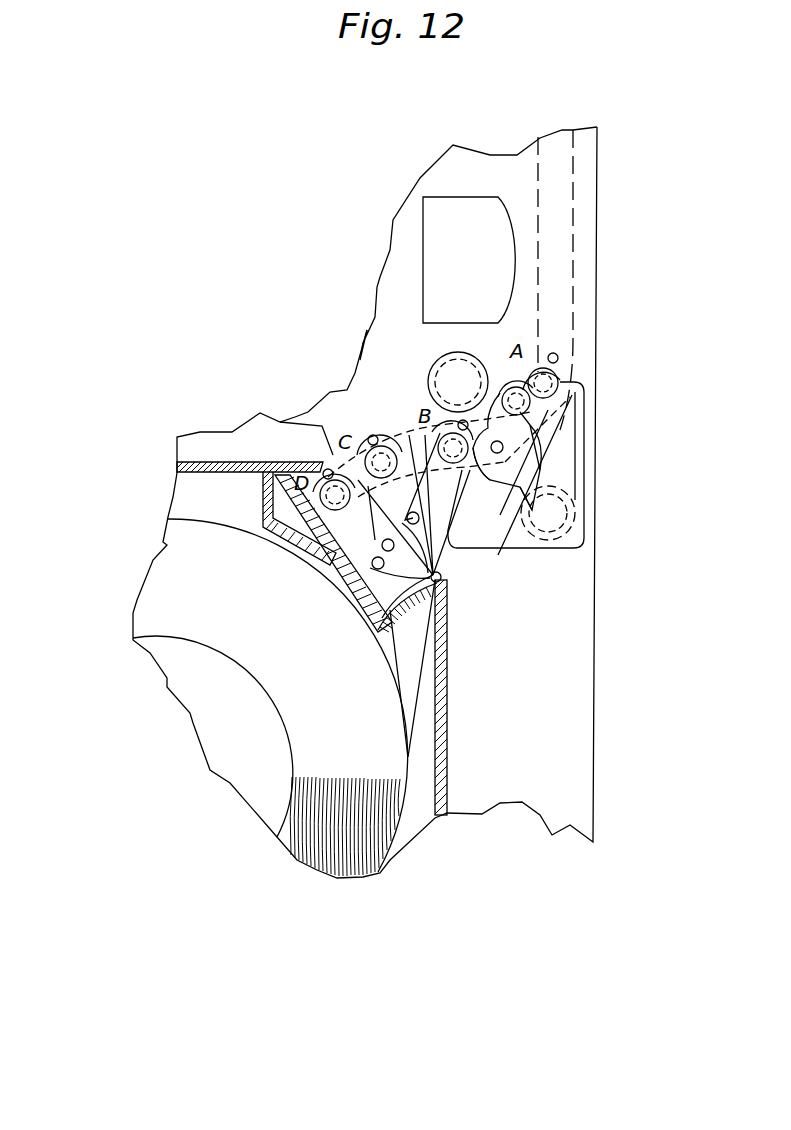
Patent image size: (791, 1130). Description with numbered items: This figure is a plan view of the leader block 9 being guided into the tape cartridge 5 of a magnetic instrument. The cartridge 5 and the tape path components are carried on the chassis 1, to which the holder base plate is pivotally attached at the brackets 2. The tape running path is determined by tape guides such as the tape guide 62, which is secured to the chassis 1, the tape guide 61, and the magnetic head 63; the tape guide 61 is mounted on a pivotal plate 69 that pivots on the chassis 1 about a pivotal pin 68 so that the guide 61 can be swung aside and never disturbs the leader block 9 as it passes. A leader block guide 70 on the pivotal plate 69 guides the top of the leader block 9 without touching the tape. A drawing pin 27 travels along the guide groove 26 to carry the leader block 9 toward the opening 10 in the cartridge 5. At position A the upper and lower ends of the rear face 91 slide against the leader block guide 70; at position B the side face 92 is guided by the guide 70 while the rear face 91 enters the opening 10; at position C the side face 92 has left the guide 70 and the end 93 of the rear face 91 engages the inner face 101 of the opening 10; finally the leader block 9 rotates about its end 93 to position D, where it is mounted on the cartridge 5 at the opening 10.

The chassis 1 is at (583, 618).
The bracket 2 is at (390, 765).
The tape cartridge 5 is at (448, 732).
The leader block 9 is at (505, 485).
The rear face 91 is at (480, 505).
The side face 92 is at (538, 447).
The end of the rear face 93 is at (500, 497).
The opening 10 is at (332, 462).
The inner face 101 is at (445, 582).
The guide groove 26 is at (568, 279).
The drawing pin 27 is at (560, 380).
The tape guide 61 is at (550, 513).
The tape guide 62 is at (453, 377).
The magnetic head 63 is at (438, 238).
The pivotal pin 68 is at (514, 398).
The pivotal plate 69 is at (577, 407).
The leader block guide 70 is at (570, 479).